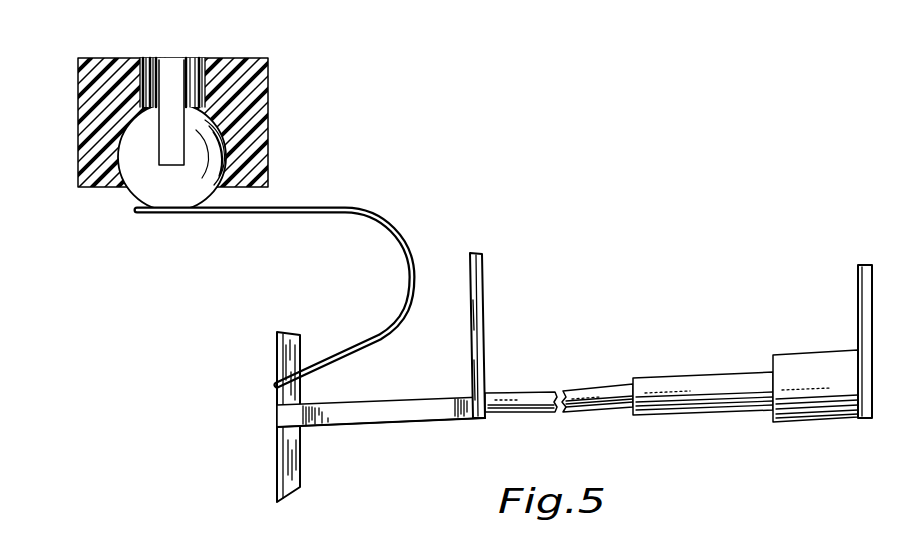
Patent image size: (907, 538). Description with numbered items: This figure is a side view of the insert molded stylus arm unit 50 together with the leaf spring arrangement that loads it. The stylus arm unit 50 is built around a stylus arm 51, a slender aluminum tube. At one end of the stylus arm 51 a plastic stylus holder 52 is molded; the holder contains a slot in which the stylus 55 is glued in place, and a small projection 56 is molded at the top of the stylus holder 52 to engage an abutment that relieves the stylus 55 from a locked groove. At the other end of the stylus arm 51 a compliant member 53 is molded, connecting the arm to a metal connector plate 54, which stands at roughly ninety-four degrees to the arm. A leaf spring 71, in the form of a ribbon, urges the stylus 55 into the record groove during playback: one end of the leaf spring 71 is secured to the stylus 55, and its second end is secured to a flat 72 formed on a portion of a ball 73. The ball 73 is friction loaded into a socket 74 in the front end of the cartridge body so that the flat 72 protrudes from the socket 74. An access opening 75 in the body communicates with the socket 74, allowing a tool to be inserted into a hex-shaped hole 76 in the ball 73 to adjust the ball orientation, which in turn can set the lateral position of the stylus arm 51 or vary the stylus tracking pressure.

The insert molded stylus arm unit 50 is at (575, 353).
The stylus arm 51 is at (518, 413).
The plastic stylus holder 52 is at (401, 416).
The compliant member 53 is at (733, 413).
The metal connector plate 54 is at (855, 305).
The stylus 55 is at (300, 468).
The small projection 56 is at (485, 293).
The leaf spring 71 is at (385, 220).
The flat 72 is at (162, 186).
The ball 73 is at (131, 208).
The socket 74 is at (268, 137).
The access opening 75 is at (166, 63).
The hex-shaped hole 76 is at (173, 113).